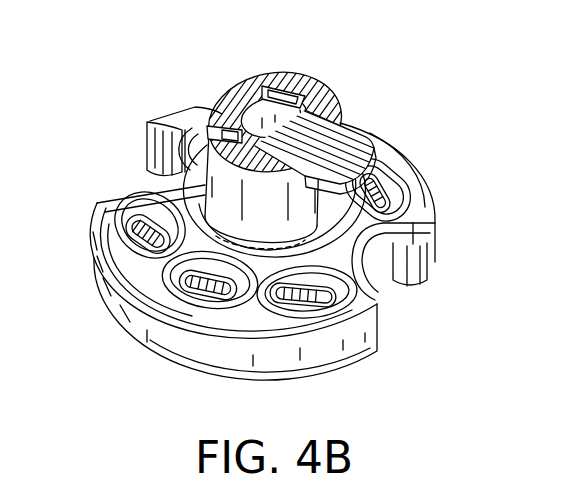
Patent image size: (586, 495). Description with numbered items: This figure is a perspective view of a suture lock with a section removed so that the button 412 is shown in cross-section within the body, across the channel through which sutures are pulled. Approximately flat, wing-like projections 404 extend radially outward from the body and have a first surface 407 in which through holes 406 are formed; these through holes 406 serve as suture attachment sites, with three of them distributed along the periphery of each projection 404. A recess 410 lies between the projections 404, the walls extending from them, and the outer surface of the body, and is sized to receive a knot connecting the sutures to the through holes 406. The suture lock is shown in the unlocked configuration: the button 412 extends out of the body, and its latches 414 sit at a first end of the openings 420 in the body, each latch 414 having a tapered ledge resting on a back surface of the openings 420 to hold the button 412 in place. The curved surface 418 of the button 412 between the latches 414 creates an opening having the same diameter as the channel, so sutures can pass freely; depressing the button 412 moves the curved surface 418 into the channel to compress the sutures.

The projections 404 is at (100, 205).
The through holes 406 is at (280, 308).
The first surface 407 is at (388, 150).
The recess 410 is at (378, 260).
The button 412 is at (343, 147).
The latches 414 is at (280, 92).
The curved surface 418 is at (303, 110).
The openings 420 is at (157, 120).